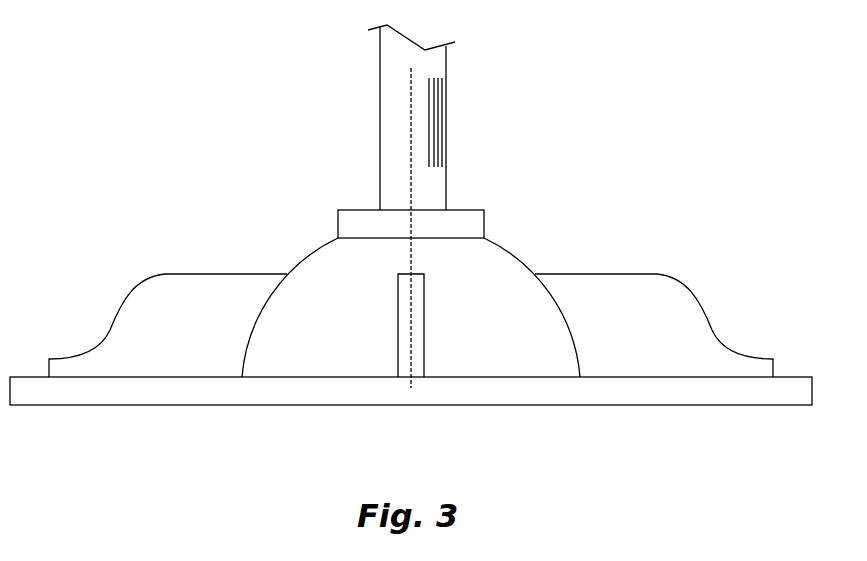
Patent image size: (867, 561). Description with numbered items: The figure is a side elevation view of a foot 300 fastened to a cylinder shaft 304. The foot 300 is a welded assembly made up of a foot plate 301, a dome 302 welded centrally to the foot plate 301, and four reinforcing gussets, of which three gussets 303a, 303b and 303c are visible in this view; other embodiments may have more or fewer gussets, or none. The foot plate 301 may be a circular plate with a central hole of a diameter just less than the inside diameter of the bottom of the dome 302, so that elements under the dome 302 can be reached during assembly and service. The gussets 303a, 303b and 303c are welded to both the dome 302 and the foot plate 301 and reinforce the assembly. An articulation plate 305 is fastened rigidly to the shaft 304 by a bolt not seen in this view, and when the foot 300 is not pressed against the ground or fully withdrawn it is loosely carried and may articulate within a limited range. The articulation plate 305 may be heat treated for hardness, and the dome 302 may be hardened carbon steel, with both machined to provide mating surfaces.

The foot 300 is at (205, 262).
The foot plate 301 is at (205, 405).
The dome 302 is at (319, 241).
The gusset 303a is at (112, 326).
The gusset 303b is at (424, 322).
The gusset 303c is at (605, 282).
The cylinder shaft 304 is at (382, 93).
The articulation plate 305 is at (465, 215).